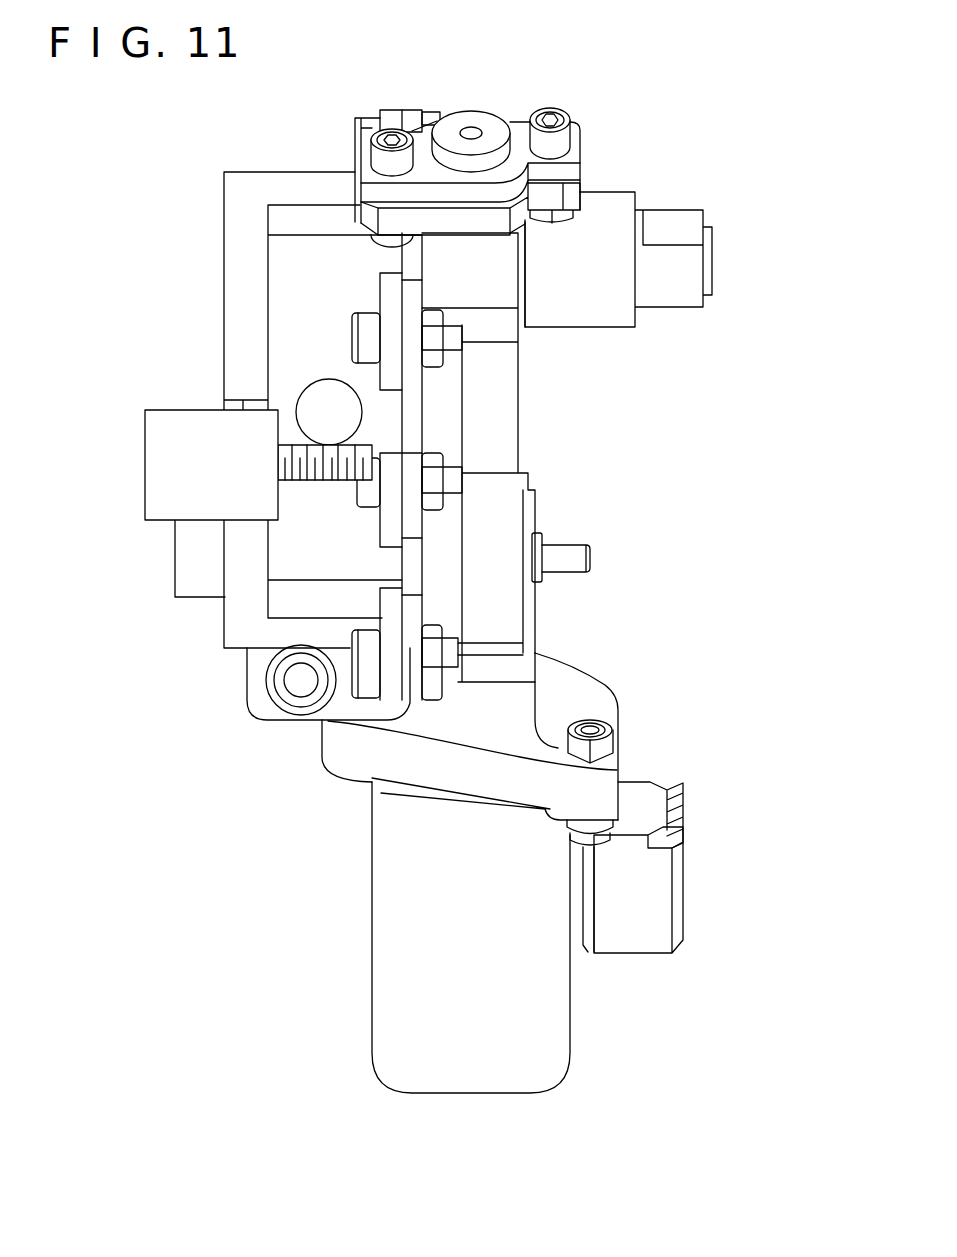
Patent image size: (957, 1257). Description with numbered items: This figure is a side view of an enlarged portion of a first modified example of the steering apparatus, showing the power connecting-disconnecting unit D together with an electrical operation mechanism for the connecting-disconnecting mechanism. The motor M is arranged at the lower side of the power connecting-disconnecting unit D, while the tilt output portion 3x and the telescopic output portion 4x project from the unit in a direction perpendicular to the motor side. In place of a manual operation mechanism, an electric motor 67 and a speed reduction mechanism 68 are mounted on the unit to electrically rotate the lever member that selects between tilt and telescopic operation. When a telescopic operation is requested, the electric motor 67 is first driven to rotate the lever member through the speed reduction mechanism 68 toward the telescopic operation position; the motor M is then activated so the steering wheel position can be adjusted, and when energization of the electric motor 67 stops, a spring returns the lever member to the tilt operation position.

The tilt output portion 3x is at (712, 262).
The telescopic output portion 4x is at (578, 562).
The power connecting-disconnecting unit D is at (547, 402).
The electric motor 67 is at (157, 487).
The speed reduction mechanism 68 is at (297, 397).
The motor M is at (380, 930).